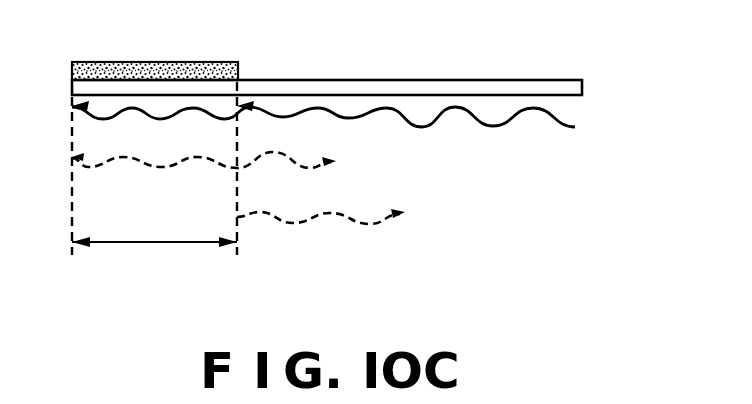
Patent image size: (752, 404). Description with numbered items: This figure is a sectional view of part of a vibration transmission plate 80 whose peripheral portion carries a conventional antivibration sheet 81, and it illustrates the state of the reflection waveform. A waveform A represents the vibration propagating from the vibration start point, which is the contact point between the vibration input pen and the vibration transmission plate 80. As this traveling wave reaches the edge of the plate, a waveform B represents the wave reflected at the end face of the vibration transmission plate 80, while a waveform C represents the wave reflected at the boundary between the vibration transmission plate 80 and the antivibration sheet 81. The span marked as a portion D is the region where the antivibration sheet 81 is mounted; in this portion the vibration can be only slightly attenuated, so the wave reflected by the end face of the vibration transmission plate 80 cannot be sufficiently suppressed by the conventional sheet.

The vibration transmission plate 80 is at (531, 80).
The antivibration sheet 81 is at (240, 71).
The waveform A is at (437, 116).
The waveform B is at (217, 161).
The waveform C is at (334, 214).
The portion D is at (154, 256).